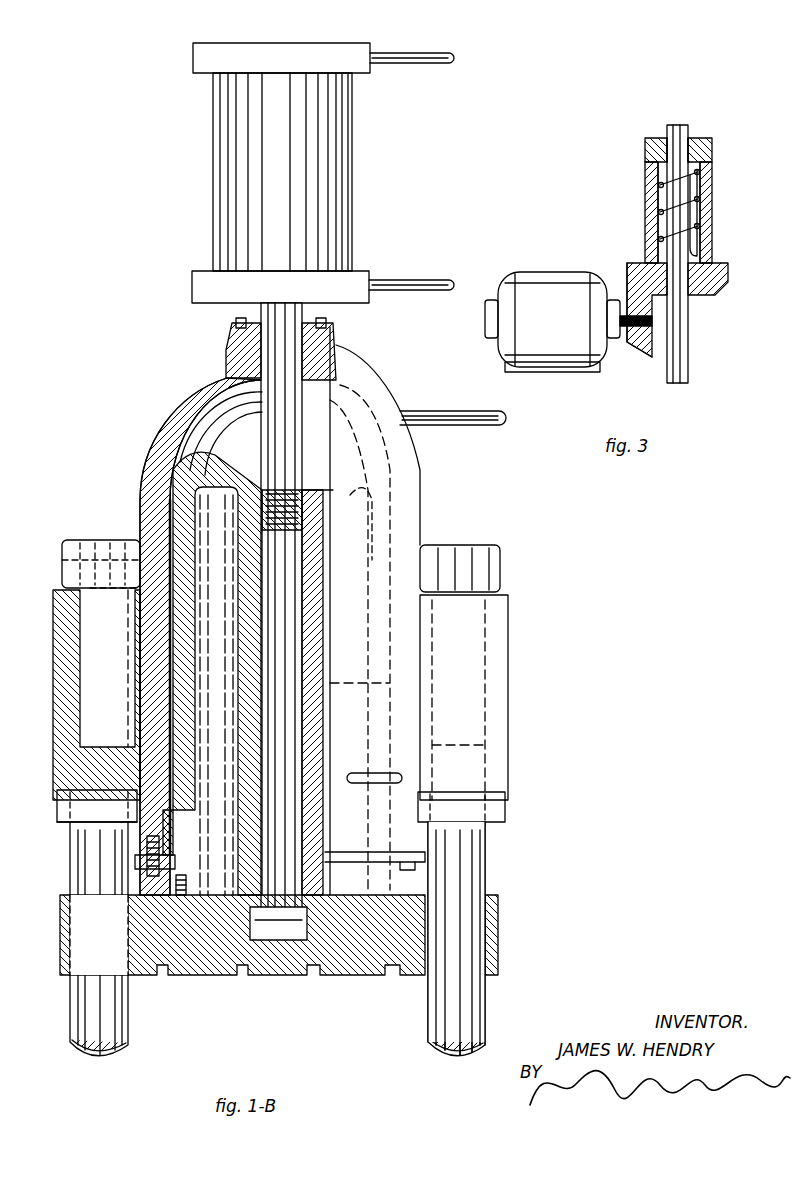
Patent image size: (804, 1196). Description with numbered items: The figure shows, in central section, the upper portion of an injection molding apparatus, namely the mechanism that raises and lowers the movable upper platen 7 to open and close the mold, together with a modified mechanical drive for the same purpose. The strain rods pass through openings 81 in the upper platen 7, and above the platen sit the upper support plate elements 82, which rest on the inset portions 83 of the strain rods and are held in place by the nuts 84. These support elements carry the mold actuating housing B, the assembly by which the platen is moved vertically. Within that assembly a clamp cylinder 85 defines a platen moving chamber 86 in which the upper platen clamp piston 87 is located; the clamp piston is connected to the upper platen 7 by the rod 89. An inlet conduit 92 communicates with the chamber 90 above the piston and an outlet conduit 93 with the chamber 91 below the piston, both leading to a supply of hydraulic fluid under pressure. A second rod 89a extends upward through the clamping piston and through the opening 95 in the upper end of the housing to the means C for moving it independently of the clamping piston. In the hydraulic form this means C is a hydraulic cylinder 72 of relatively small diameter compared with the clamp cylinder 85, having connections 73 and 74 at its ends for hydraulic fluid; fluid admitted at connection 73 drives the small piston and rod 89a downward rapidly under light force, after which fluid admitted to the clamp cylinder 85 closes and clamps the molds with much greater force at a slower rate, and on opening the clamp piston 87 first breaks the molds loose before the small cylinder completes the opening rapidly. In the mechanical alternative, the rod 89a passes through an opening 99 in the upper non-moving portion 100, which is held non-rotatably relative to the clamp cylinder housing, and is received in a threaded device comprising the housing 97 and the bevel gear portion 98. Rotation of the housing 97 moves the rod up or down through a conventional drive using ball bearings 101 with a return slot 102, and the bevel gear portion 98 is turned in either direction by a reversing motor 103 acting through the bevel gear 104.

In FIG. 1B, the upper platen 7 is at (345, 975).
In FIG. 1B, the hydraulic cylinder 72 is at (338, 172).
In FIG. 1B, the connection 73 is at (424, 55).
In FIG. 1B, the connection 74 is at (400, 282).
In FIG. 1B, the openings 81 is at (490, 978).
In FIG. 1B, the upper support plate elements 82 is at (70, 806).
In FIG. 1B, the inset portions 83 is at (72, 825).
In FIG. 1B, the nuts 84 is at (78, 552).
In FIG. 1B, the clamp cylinder 85 is at (80, 590).
In FIG. 1B, the platen moving chamber 86 is at (168, 612).
In FIG. 1B, the upper platen clamp piston 87 is at (183, 418).
In FIG. 1B, the rod 89 is at (285, 892).
In FIG. 1B, the rod 89a is at (287, 457).
In FIG. 3, the rod 89a is at (673, 133).
In FIG. 1B, the chamber above the piston 90 is at (317, 400).
In FIG. 1B, the chamber below the piston 91 is at (177, 773).
In FIG. 1B, the inlet conduit 92 is at (452, 425).
In FIG. 1B, the outlet conduit 93 is at (402, 777).
In FIG. 1B, the opening 95 is at (250, 357).
In FIG. 3, the housing 97 is at (723, 253).
In FIG. 3, the bevel gear portion 98 is at (715, 282).
In FIG. 3, the opening 99 is at (697, 142).
In FIG. 3, the upper non-moving portion 100 is at (645, 155).
In FIG. 3, the ball bearings 101 is at (700, 188).
In FIG. 3, the return slot 102 is at (700, 224).
In FIG. 3, the reversing motor 103 is at (547, 293).
In FIG. 3, the bevel gear 104 is at (623, 353).
In FIG. 1B, the means for moving the rod C is at (208, 163).
In FIG. 1B, the mold actuating housing B is at (52, 712).